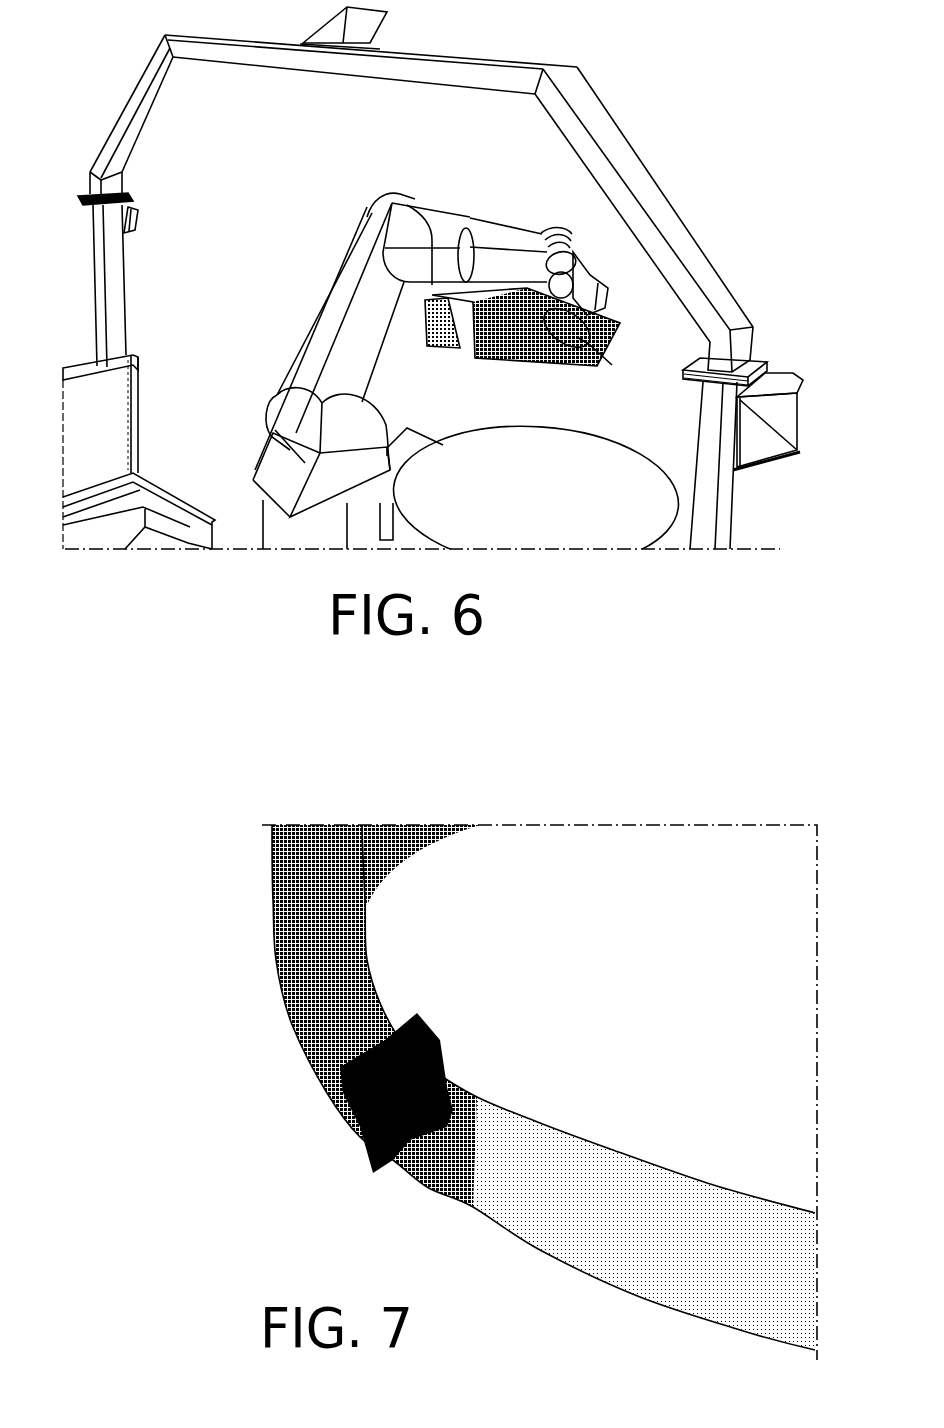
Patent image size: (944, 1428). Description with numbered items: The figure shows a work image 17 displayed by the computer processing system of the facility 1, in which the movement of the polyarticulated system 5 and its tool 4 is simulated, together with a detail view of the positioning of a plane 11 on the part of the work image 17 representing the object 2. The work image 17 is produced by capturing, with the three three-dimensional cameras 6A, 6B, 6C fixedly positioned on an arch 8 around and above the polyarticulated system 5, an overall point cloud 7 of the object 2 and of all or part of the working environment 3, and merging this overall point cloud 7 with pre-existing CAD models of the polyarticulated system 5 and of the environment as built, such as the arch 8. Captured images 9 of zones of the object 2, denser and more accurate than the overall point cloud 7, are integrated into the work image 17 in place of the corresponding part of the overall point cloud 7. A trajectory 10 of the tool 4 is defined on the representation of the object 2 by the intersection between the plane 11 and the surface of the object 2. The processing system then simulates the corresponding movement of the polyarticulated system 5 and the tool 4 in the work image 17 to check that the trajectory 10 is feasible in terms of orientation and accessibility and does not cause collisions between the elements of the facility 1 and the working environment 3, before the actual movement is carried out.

In FIG. 6, the facility 1 is at (462, 288).
In FIG. 6, the object 2 is at (636, 294).
In FIG. 7, the object 2 is at (463, 1087).
In FIG. 6, the working environment 3 is at (429, 346).
In FIG. 6, the tool 4 is at (573, 337).
In FIG. 6, the polyarticulated system 5 is at (297, 358).
In FIG. 6, the 3D camera 6A is at (380, 23).
In FIG. 6, the 3D camera 6B is at (785, 423).
In FIG. 6, the 3D camera 6C is at (138, 213).
In FIG. 7, the overall point cloud 7 is at (273, 942).
In FIG. 6, the arch 8 is at (135, 107).
In FIG. 6, the captured images 9 is at (503, 353).
In FIG. 6, the trajectory 10 is at (458, 345).
In FIG. 7, the plane 11 is at (367, 1093).
In FIG. 6, the work image 17 is at (744, 37).
In FIG. 7, the work image 17 is at (801, 864).